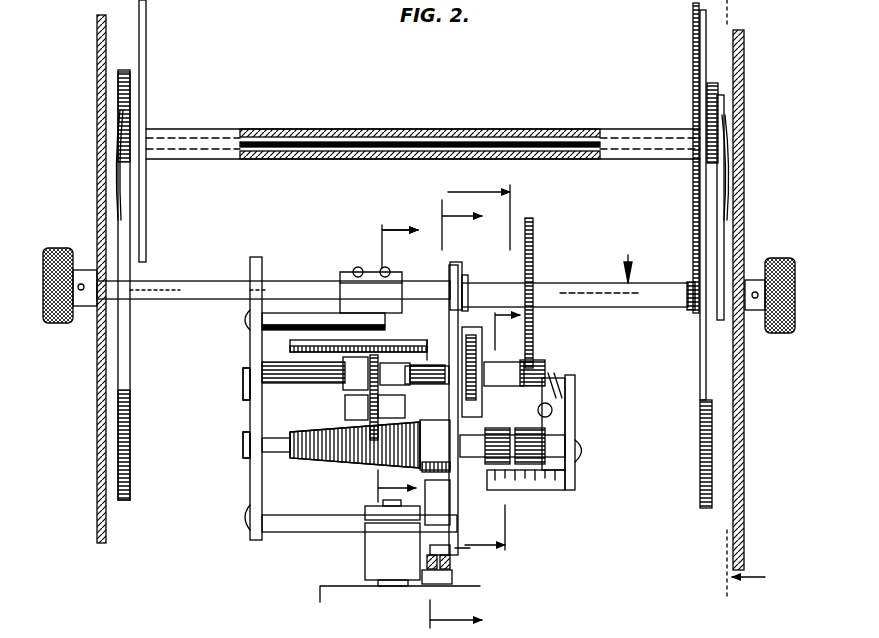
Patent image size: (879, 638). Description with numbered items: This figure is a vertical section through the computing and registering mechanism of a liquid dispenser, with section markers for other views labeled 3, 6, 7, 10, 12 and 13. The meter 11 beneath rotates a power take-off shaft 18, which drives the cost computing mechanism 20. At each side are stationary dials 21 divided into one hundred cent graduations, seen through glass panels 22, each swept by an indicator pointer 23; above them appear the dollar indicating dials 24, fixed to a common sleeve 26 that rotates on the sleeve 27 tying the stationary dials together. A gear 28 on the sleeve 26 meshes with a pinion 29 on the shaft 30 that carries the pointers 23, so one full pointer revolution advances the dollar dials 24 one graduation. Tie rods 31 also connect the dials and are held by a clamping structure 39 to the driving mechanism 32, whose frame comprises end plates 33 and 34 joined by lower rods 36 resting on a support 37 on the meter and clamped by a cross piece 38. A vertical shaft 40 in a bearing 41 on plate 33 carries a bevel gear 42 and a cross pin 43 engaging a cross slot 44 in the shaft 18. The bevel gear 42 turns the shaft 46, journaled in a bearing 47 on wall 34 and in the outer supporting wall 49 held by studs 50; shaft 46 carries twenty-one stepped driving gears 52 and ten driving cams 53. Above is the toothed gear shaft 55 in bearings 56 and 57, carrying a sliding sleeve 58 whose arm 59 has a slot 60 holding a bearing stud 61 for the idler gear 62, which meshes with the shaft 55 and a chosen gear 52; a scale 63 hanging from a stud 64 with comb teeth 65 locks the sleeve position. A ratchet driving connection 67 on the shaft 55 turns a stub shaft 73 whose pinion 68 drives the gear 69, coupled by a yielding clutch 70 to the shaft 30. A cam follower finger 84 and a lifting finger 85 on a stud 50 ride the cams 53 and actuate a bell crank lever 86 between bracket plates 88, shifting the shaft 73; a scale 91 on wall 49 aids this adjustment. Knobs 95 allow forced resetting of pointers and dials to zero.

The section arrow 10 is at (727, 300).
The meter structure 11 is at (485, 598).
The shaft centerline 12 is at (517, 318).
The section line 13 is at (438, 417).
The power take-off shaft 18 is at (465, 572).
The cost computing mechanism 20 is at (232, 485).
The dials 21 is at (132, 416).
The glass panels 22 is at (97, 490).
The indicator pointer 23 is at (103, 196).
The dollar indicating dials 24 is at (147, 38).
The sleeve 26 is at (538, 130).
The sleeve 27 is at (455, 140).
The gear 28 is at (693, 56).
The pinion 29 is at (691, 310).
The shaft 30 is at (665, 292).
The tie rods 31 is at (248, 283).
The driving mechanism 32 is at (248, 350).
The end plate 33 is at (452, 396).
The end plate 34 is at (250, 405).
The lower rods 36 is at (298, 528).
The support 37 is at (366, 552).
The cross piece 38 is at (365, 512).
The clamping structure 39 is at (366, 270).
The shaft 40 is at (440, 570).
The bearing 41 is at (439, 502).
The bevel gear 42 is at (422, 470).
The cross pin 43 is at (450, 550).
The cross slot 44 is at (425, 554).
The shaft 46 is at (432, 445).
The bearing 47 is at (268, 438).
The outer supporting wall 49 is at (575, 410).
The studs 50 is at (580, 455).
The driving gears 52 is at (318, 436).
The driving cams 53 is at (512, 430).
The gear shaft 55 is at (288, 356).
The bearing 56 is at (448, 362).
The bearing 57 is at (246, 380).
The sleeve 58 is at (412, 373).
The arm 59 is at (356, 372).
The slot 60 is at (356, 426).
The bearing stud 61 is at (392, 406).
The idler gear 62 is at (368, 396).
The scale 63 is at (315, 372).
The stud 64 is at (328, 314).
The comb teeth 65 is at (420, 352).
The ratchet driving connection 67 is at (470, 312).
The pinion 68 is at (536, 370).
The gear 69 is at (534, 255).
The yielding clutch 70 is at (460, 275).
The shaft 73 is at (500, 370).
The finger 84 is at (542, 404).
The lifting finger 85 is at (560, 436).
The bell crank lever 86 is at (556, 378).
The bracket plates 88 is at (560, 390).
The scale 91 is at (558, 490).
The knobs 95 is at (60, 325).
The section line 3 is at (386, 363).
The section line 6 is at (488, 372).
The section line 7 is at (491, 407).